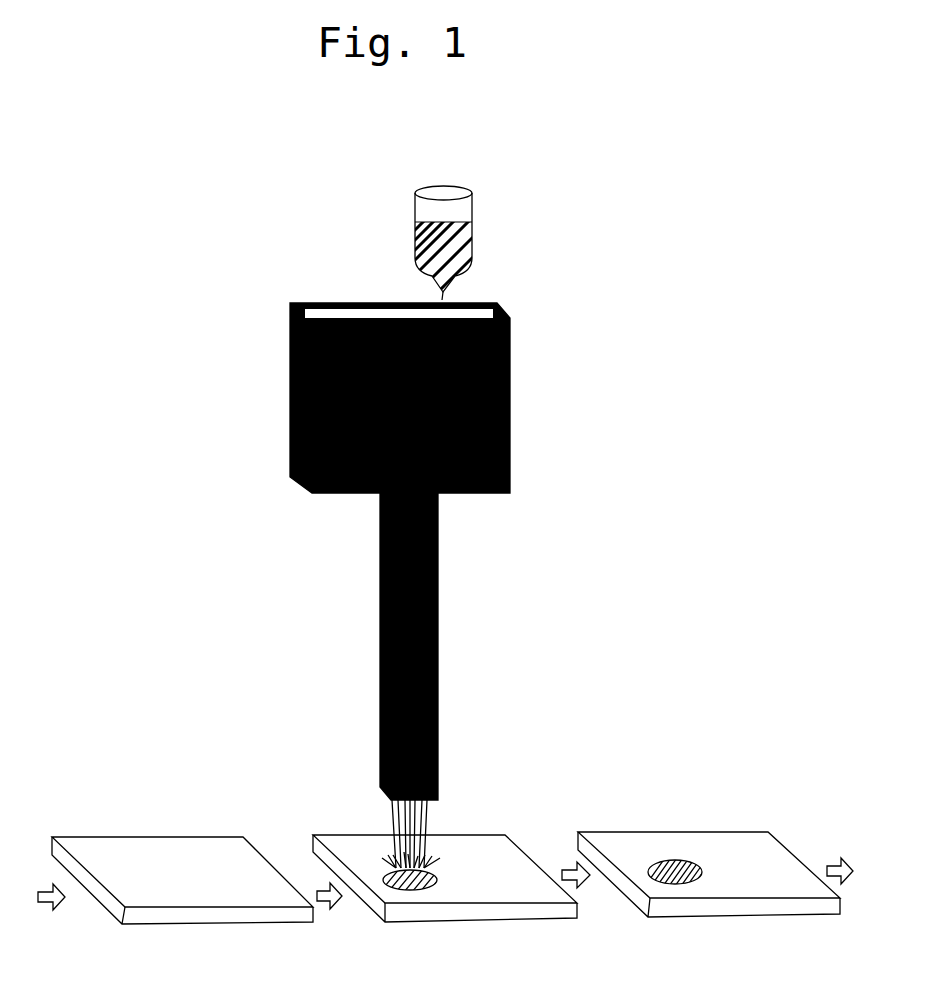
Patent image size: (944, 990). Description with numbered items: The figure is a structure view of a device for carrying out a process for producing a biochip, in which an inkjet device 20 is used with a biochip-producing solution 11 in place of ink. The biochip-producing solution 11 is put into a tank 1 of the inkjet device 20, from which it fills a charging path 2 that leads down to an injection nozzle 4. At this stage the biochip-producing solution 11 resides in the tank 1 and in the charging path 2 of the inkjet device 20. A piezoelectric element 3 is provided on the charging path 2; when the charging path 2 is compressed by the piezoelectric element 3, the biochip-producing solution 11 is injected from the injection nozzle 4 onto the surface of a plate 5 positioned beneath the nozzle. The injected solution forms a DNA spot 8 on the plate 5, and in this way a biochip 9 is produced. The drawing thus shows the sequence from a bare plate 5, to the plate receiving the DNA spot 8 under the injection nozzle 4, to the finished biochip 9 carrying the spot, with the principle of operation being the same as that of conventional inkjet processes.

The tank 1 is at (390, 312).
The charging path 2 is at (438, 561).
The piezoelectric element 3 is at (380, 716).
The injection nozzle 4 is at (438, 807).
The plate 5 is at (230, 907).
The DNA spot 8 is at (432, 884).
The biochip 9 is at (772, 887).
The biochip-producing solution 11 is at (468, 233).
The inkjet device 20 is at (242, 562).